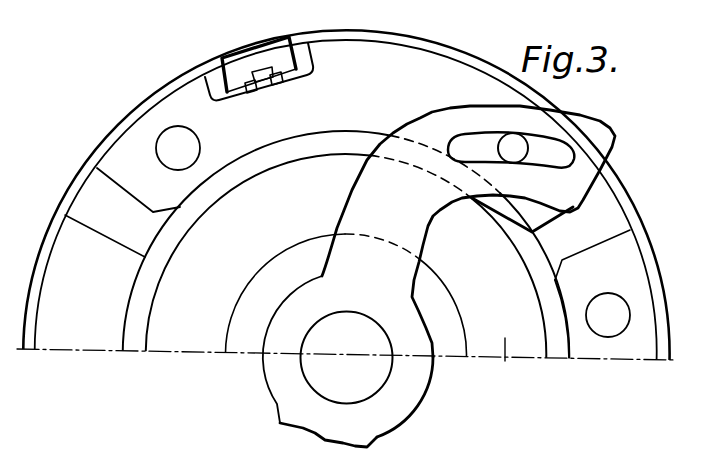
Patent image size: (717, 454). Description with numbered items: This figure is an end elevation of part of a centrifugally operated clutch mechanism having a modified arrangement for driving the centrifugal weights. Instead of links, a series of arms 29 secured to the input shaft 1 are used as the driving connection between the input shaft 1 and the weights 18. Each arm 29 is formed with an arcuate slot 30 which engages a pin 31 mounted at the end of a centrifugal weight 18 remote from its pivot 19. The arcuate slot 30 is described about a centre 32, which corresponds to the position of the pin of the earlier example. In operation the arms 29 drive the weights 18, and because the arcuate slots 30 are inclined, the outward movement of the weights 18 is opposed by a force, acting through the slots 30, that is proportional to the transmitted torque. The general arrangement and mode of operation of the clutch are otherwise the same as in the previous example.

The input shaft 1 is at (313, 363).
The centrifugal weights 18 is at (363, 89).
The pivots 19 is at (177, 145).
The arms 29 is at (413, 182).
The arcuate slots 30 is at (477, 133).
The pins 31 is at (514, 152).
The centres 32 is at (510, 353).